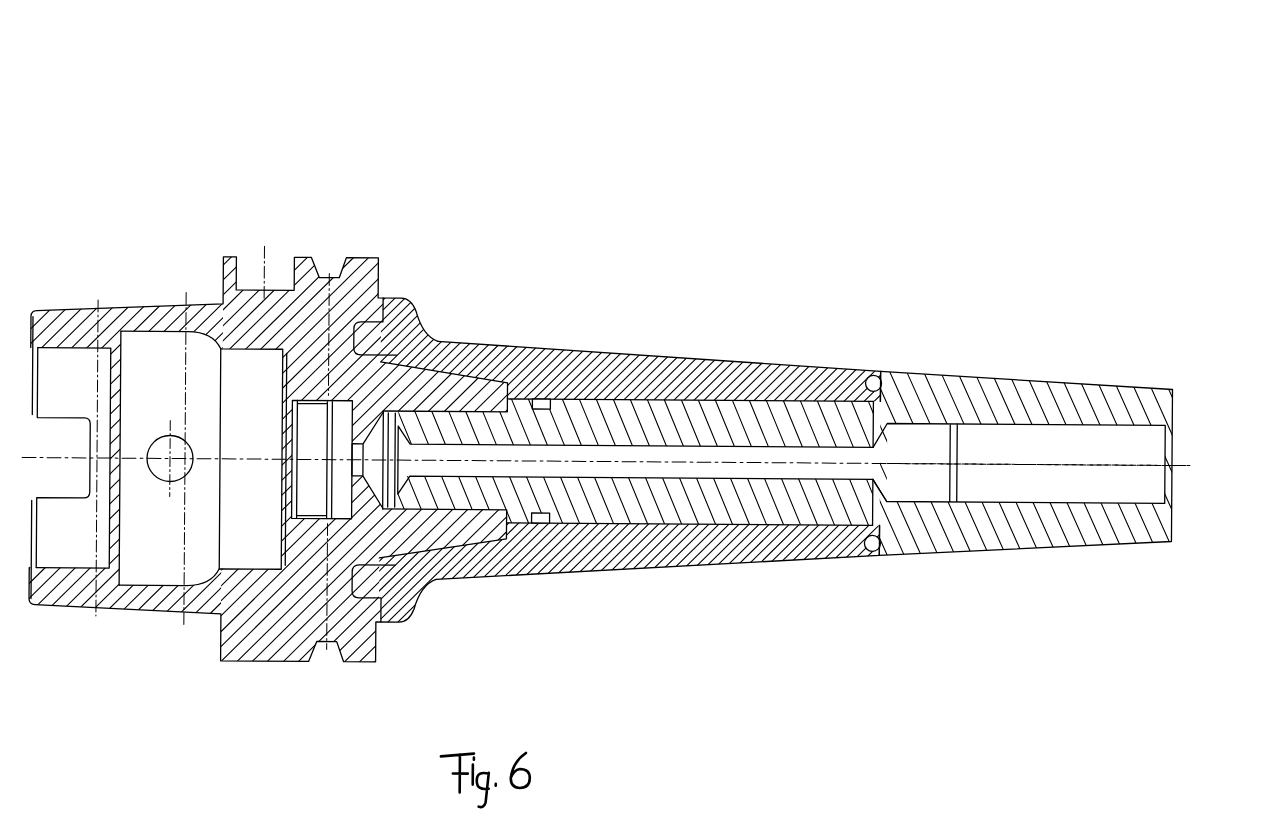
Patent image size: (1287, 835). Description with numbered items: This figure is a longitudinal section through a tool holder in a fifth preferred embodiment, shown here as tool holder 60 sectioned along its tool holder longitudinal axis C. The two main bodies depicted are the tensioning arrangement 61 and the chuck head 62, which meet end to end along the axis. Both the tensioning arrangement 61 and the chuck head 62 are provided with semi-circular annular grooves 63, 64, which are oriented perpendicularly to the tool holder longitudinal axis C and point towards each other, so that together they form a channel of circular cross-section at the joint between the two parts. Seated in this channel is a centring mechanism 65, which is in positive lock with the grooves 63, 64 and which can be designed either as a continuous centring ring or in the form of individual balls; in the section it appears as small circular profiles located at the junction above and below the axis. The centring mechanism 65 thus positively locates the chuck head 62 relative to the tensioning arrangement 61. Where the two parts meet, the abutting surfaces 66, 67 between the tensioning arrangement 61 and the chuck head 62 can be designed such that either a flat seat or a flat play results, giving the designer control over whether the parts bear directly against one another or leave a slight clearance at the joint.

The tool holder 60 is at (679, 181).
The tensioning arrangement 61 is at (700, 366).
The chuck head 62 is at (997, 394).
The semi-circular annular groove 63 is at (892, 389).
The semi-circular annular groove 64 is at (866, 370).
The centring mechanism 65 is at (871, 546).
The abutting surface 66 is at (878, 517).
The abutting surface 67 is at (882, 368).
The tool holder longitudinal axis C is at (1143, 458).